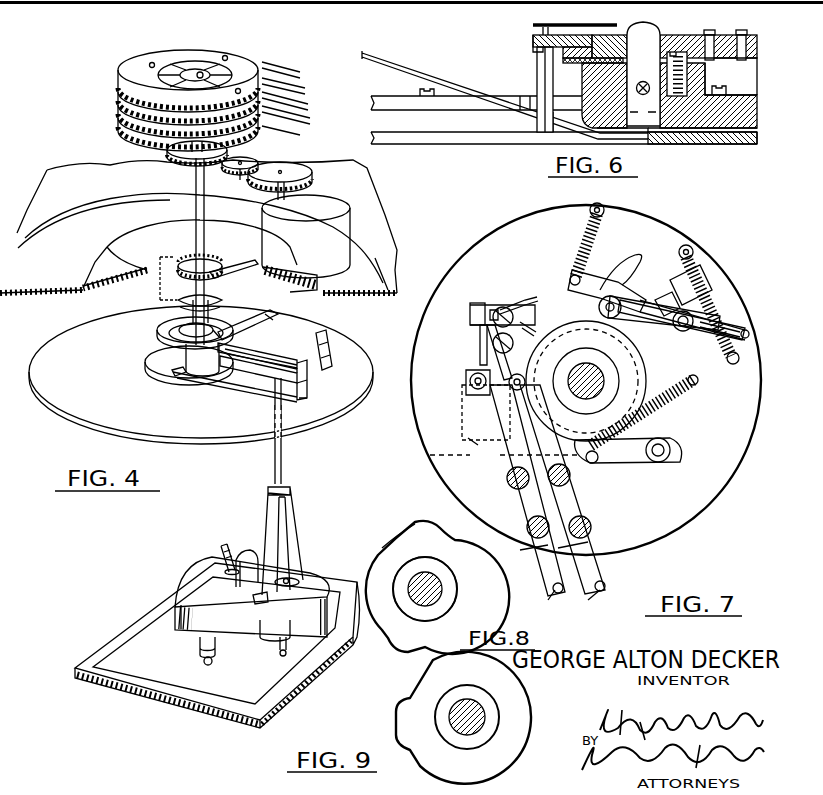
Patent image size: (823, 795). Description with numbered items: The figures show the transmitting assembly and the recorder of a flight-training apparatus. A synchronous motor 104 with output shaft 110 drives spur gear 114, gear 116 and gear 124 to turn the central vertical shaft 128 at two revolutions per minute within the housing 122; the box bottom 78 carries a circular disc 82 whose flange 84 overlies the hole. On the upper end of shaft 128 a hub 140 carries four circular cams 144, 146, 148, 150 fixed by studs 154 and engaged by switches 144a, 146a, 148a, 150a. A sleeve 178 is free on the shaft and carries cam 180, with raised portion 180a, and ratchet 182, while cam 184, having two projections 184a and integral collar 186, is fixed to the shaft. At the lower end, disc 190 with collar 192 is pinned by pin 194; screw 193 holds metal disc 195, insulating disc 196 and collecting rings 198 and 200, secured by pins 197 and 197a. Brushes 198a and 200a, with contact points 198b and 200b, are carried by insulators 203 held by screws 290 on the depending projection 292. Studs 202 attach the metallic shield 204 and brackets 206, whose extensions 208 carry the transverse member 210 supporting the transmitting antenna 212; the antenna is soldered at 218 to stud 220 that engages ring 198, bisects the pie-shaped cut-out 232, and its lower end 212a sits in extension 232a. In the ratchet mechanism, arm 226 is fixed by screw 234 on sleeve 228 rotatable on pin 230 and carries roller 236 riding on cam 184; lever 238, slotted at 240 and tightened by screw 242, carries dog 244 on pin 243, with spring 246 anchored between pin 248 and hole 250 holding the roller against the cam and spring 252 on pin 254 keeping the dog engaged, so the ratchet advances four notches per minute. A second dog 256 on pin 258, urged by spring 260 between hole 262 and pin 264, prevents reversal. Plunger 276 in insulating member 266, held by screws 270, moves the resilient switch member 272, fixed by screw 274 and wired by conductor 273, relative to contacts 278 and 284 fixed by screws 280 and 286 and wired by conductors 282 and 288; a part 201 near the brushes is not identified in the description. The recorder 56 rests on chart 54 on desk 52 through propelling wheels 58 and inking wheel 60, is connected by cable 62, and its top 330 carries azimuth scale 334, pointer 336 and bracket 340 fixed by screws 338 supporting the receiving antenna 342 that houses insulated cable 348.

In FIG. 4, the desk 52 is at (196, 705).
In FIG. 4, the chart 54 is at (160, 622).
In FIG. 4, the recorder 56 is at (164, 640).
In FIG. 4, the propelling wheels 58 is at (201, 661).
In FIG. 4, the inking wheel 60 is at (283, 656).
In FIG. 4, the cable 62 is at (222, 552).
In FIG. 4, the bottom of box 78 is at (36, 180).
In FIG. 4, the circular disc 82 is at (200, 276).
In FIG. 4, the flange 84 is at (72, 218).
In FIG. 4, the synchronous motor 104 is at (320, 209).
In FIG. 4, the output shaft 110 is at (284, 200).
In FIG. 4, the spur gear 114 is at (306, 172).
In FIG. 4, the gear 116 is at (234, 170).
In FIG. 7, the housing 122 is at (737, 478).
In FIG. 4, the gear 124 is at (168, 152).
In FIG. 4, the central vertical shaft 128 is at (200, 71).
In FIG. 6, the central vertical shaft 128 is at (655, 16).
In FIG. 7, the central vertical shaft 128 is at (602, 373).
In FIG. 8, the central vertical shaft 128 is at (431, 587).
In FIG. 9, the central vertical shaft 128 is at (468, 700).
In FIG. 4, the hub 140 is at (188, 68).
In FIG. 4, the circular cam 144 is at (120, 88).
In FIG. 4, the circular cam 146 is at (120, 102).
In FIG. 4, the circular cam 148 is at (120, 117).
In FIG. 4, the circular cam 150 is at (132, 131).
In FIG. 4, the switch 144a is at (273, 52).
In FIG. 4, the switch 146a is at (294, 73).
In FIG. 4, the switch 148a is at (310, 84).
In FIG. 4, the switch 150a is at (286, 118).
In FIG. 4, the studs 154 is at (150, 63).
In FIG. 9, the sleeve 178 is at (447, 708).
In FIG. 4, the cam 180 is at (214, 264).
In FIG. 7, the cam 180 is at (611, 297).
In FIG. 9, the cam 180 is at (415, 689).
In FIG. 7, the raised portion 180a is at (545, 431).
In FIG. 9, the raised portion 180a is at (397, 712).
In FIG. 4, the ratchet 182 is at (180, 256).
In FIG. 7, the ratchet 182 is at (560, 323).
In FIG. 4, the cam 184 is at (165, 309).
In FIG. 7, the cam 184 is at (625, 381).
In FIG. 8, the cam 184 is at (395, 558).
In FIG. 8, the projections 184a is at (410, 518).
In FIG. 7, the collar 186 is at (590, 362).
In FIG. 8, the collar 186 is at (421, 563).
In FIG. 4, the circular disc 190 is at (160, 358).
In FIG. 6, the circular disc 190 is at (432, 128).
In FIG. 4, the collar 192 is at (152, 370).
In FIG. 6, the collar 192 is at (397, 24).
In FIG. 6, the screw 193 is at (680, 52).
In FIG. 6, the pin 194 is at (643, 81).
In FIG. 6, the metal disc 195 is at (484, 44).
In FIG. 6, the insulating disc 196 is at (563, 50).
In FIG. 6, the pin 197 is at (736, 61).
In FIG. 6, the pin 197a is at (725, 39).
In FIG. 4, the collecting ring 198 is at (176, 328).
In FIG. 6, the collecting ring 198 is at (533, 40).
In FIG. 4, the collector brush 198a is at (280, 353).
In FIG. 6, the collector brush 198a is at (536, 23).
In FIG. 7, the collector brush 198a is at (553, 584).
In FIG. 7, the contact point 198b is at (470, 381).
In FIG. 4, the collector ring 200 is at (180, 341).
In FIG. 6, the collector ring 200 is at (556, 44).
In FIG. 4, the brush 200a is at (290, 322).
In FIG. 6, the brush 200a is at (568, 27).
In FIG. 7, the brush 200a is at (606, 580).
In FIG. 7, the contact point 200b is at (488, 405).
In FIG. 7, the pin 201 is at (606, 591).
In FIG. 4, the studs 202 is at (180, 375).
In FIG. 6, the studs 202 is at (742, 101).
In FIG. 7, the insulators 203 is at (540, 557).
In FIG. 4, the metallic shield 204 is at (62, 342).
In FIG. 6, the metallic shield 204 is at (474, 133).
In FIG. 4, the antenna supporting brackets 206 is at (284, 356).
In FIG. 6, the antenna supporting brackets 206 is at (381, 100).
In FIG. 4, the vertical extension 208 is at (308, 376).
In FIG. 4, the transverse bakelite member 210 is at (332, 337).
In FIG. 4, the transmitting antenna 212 is at (260, 367).
In FIG. 6, the transmitting antenna 212 is at (402, 66).
In FIG. 6, the lowermost end 212a is at (630, 152).
In FIG. 6, the solder joint 218 is at (540, 132).
In FIG. 4, the stud 220 is at (212, 390).
In FIG. 6, the stud 220 is at (310, 22).
In FIG. 7, the arm 226 is at (712, 305).
In FIG. 7, the sleeve 228 is at (761, 325).
In FIG. 7, the pin 230 is at (696, 322).
In FIG. 4, the pie-shaped portion 232 is at (317, 400).
In FIG. 6, the extension 232a is at (656, 140).
In FIG. 7, the screw 234 is at (722, 316).
In FIG. 7, the roller 236 is at (641, 300).
In FIG. 7, the lever 238 is at (702, 300).
In FIG. 7, the slot 240 is at (688, 275).
In FIG. 7, the screw 242 is at (633, 306).
In FIG. 7, the pin 243 is at (658, 455).
In FIG. 7, the dog 244 is at (628, 463).
In FIG. 7, the first spring 246 is at (692, 252).
In FIG. 7, the pin 248 is at (685, 247).
In FIG. 7, the hole 250 is at (734, 364).
In FIG. 7, the second spring 252 is at (667, 420).
In FIG. 7, the pin 254 is at (592, 460).
In FIG. 7, the second dog 256 is at (590, 281).
In FIG. 7, the pin 258 is at (634, 278).
In FIG. 7, the spring 260 is at (590, 237).
In FIG. 7, the hole 262 is at (574, 274).
In FIG. 7, the pin 264 is at (602, 211).
In FIG. 4, the insulating member 266 is at (243, 278).
In FIG. 7, the insulating member 266 is at (500, 361).
In FIG. 7, the screws 270 is at (496, 344).
In FIG. 7, the resilient switch member 272 is at (480, 336).
In FIG. 7, the conductor 273 is at (470, 451).
In FIG. 7, the screw 274 is at (478, 429).
In FIG. 7, the plunger 276 is at (495, 393).
In FIG. 7, the first fixed contact member 278 is at (470, 311).
In FIG. 7, the screw 280 is at (505, 310).
In FIG. 7, the conductor 282 is at (535, 299).
In FIG. 7, the second contact 284 is at (478, 309).
In FIG. 7, the screw 286 is at (495, 306).
In FIG. 7, the conductor 288 is at (531, 330).
In FIG. 7, the screws 290 is at (523, 487).
In FIG. 8, the depending projection 292 is at (446, 517).
In FIG. 4, the top of recorder 330 is at (200, 588).
In FIG. 4, the azimuth scale 334 is at (292, 572).
In FIG. 4, the pointer 336 is at (308, 577).
In FIG. 4, the screws 338 is at (259, 630).
In FIG. 4, the bracket 340 is at (291, 520).
In FIG. 4, the receiving antenna 342 is at (298, 464).
In FIG. 4, the insulated cable 348 is at (252, 553).